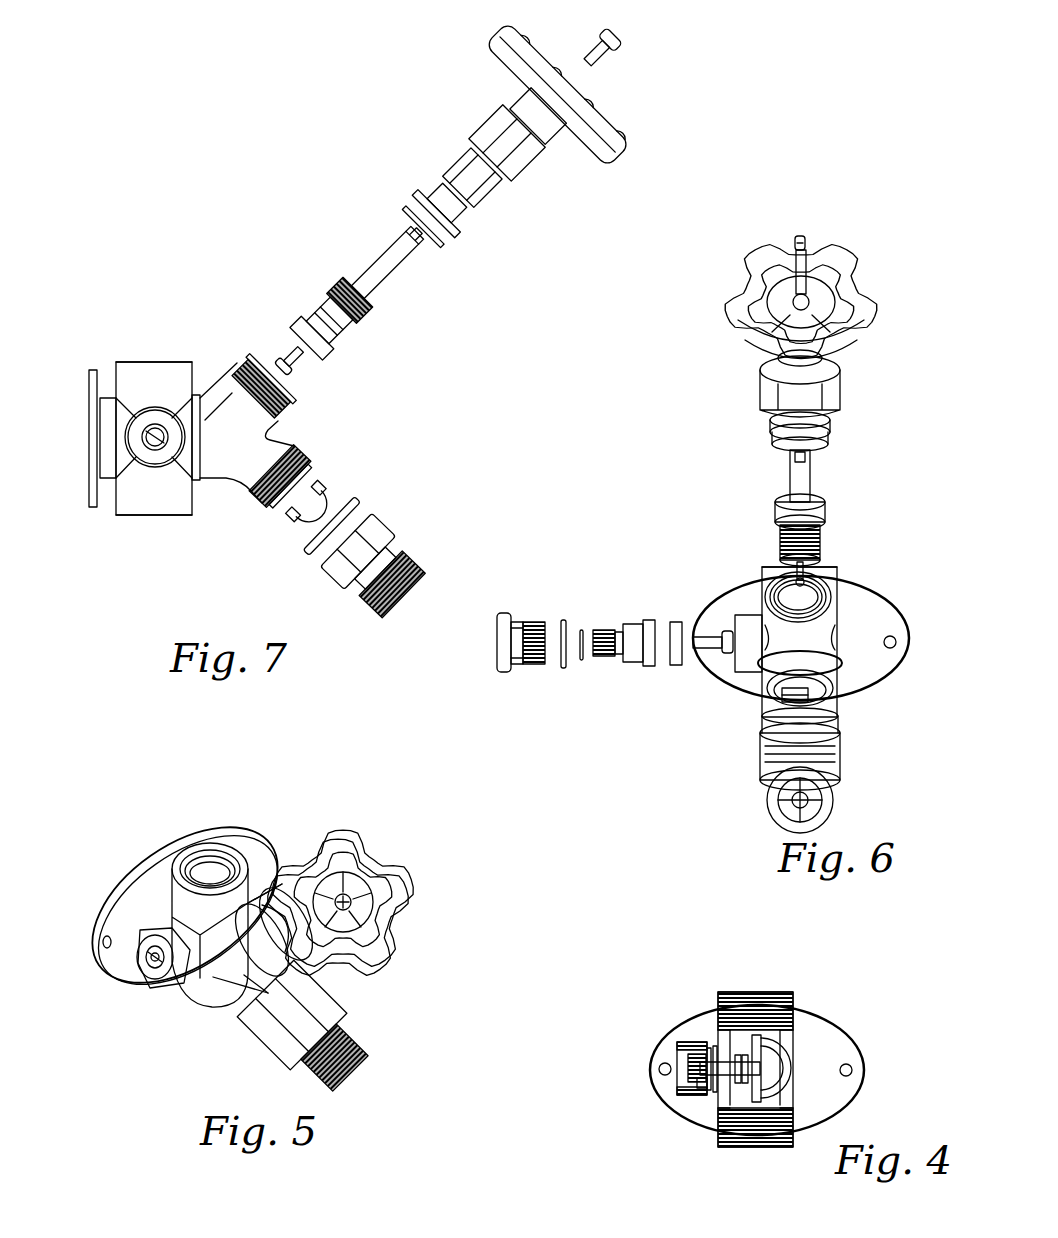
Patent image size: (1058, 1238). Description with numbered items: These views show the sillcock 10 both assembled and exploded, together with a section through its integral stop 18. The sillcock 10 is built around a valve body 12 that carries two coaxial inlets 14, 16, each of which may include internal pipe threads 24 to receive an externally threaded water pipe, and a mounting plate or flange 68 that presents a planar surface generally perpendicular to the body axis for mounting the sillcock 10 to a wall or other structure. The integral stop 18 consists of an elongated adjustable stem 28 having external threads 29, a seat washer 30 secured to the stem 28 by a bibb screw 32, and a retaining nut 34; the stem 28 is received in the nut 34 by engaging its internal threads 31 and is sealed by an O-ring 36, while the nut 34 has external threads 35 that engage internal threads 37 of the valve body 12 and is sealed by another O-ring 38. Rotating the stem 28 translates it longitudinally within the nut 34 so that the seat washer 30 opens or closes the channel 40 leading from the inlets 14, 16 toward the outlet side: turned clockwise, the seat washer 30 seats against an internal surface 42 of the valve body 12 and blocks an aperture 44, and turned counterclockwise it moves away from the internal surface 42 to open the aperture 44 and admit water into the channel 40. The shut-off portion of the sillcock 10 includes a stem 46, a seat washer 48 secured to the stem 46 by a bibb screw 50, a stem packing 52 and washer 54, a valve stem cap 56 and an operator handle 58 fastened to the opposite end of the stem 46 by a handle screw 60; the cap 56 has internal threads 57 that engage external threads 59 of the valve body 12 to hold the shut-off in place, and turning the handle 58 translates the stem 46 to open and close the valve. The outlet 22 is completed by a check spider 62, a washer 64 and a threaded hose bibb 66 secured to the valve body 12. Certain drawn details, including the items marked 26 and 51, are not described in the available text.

In FIG. 7, the sillcock 10 is at (285, 140).
In FIG. 6, the sillcock 10 is at (625, 375).
In FIG. 5, the sillcock 10 is at (180, 770).
In FIG. 7, the valve body 12 is at (210, 468).
In FIG. 6, the valve body 12 is at (845, 660).
In FIG. 5, the valve body 12 is at (205, 975).
In FIG. 4, the valve body 12 is at (798, 1088).
In FIG. 7, the inlet 14 is at (155, 362).
In FIG. 6, the inlet 14 is at (770, 570).
In FIG. 5, the inlet 14 is at (195, 855).
In FIG. 4, the inlet 14 is at (742, 998).
In FIG. 7, the inlet 16 is at (172, 517).
In FIG. 6, the inlet 16 is at (800, 642).
In FIG. 5, the inlet 16 is at (200, 1010).
In FIG. 4, the inlet 16 is at (742, 1147).
In FIG. 4, the integral stop 18 is at (658, 912).
In FIG. 7, the outlet 22 is at (390, 535).
In FIG. 6, the outlet 22 is at (845, 745).
In FIG. 5, the outlet 22 is at (275, 1040).
In FIG. 4, the internal pipe threads 24 is at (775, 1040).
In FIG. 4, the outlet passage 26 is at (772, 1147).
In FIG. 7, the elongated adjustable stem 28 is at (150, 437).
In FIG. 6, the elongated adjustable stem 28 is at (633, 664).
In FIG. 5, the elongated adjustable stem 28 is at (150, 970).
In FIG. 4, the elongated adjustable stem 28 is at (692, 1068).
In FIG. 6, the external threads 29 is at (605, 656).
In FIG. 4, the external threads 29 is at (700, 1062).
In FIG. 6, the seat washer 30 is at (675, 622).
In FIG. 4, the seat washer 30 is at (738, 1088).
In FIG. 4, the internal threads 31 is at (700, 1093).
In FIG. 6, the bibb screw 32 is at (705, 648).
In FIG. 4, the bibb screw 32 is at (740, 1078).
In FIG. 7, the retaining nut 34 is at (152, 455).
In FIG. 6, the retaining nut 34 is at (510, 613).
In FIG. 5, the retaining nut 34 is at (165, 980).
In FIG. 4, the retaining nut 34 is at (685, 1048).
In FIG. 6, the external threads 35 is at (530, 672).
In FIG. 4, the external threads 35 is at (700, 1040).
In FIG. 6, the O-ring 36 is at (582, 630).
In FIG. 4, the O-ring 36 is at (708, 1046).
In FIG. 4, the internal threads 37 is at (712, 1095).
In FIG. 6, the O-ring 38 is at (563, 668).
In FIG. 4, the O-ring 38 is at (714, 1046).
In FIG. 4, the channel 40 is at (790, 1085).
In FIG. 4, the internal surface 42 is at (770, 1035).
In FIG. 4, the aperture 44 is at (800, 1072).
In FIG. 7, the stem 46 is at (398, 268).
In FIG. 6, the stem 46 is at (798, 475).
In FIG. 7, the seat washer 48 is at (308, 322).
In FIG. 6, the seat washer 48 is at (825, 525).
In FIG. 7, the bibb screw 50 is at (298, 360).
In FIG. 6, the bibb screw 50 is at (808, 566).
In FIG. 6, the inlet bore 51 is at (830, 610).
In FIG. 7, the stem packing 52 is at (465, 228).
In FIG. 6, the stem packing 52 is at (775, 420).
In FIG. 7, the washer 54 is at (408, 215).
In FIG. 6, the washer 54 is at (828, 432).
In FIG. 7, the valve stem cap 56 is at (520, 162).
In FIG. 6, the valve stem cap 56 is at (832, 378).
In FIG. 5, the valve stem cap 56 is at (258, 920).
In FIG. 7, the internal threads 57 is at (496, 216).
In FIG. 7, the operator handle 58 is at (500, 45).
In FIG. 6, the operator handle 58 is at (745, 265).
In FIG. 5, the operator handle 58 is at (408, 892).
In FIG. 7, the external threads 59 is at (250, 370).
In FIG. 7, the handle screw 60 is at (600, 65).
In FIG. 6, the handle screw 60 is at (796, 238).
In FIG. 5, the handle screw 60 is at (352, 896).
In FIG. 7, the check spider 62 is at (322, 490).
In FIG. 6, the check spider 62 is at (782, 695).
In FIG. 7, the washer 64 is at (355, 512).
In FIG. 6, the washer 64 is at (840, 712).
In FIG. 7, the threaded hose bibb 66 is at (420, 568).
In FIG. 6, the threaded hose bibb 66 is at (775, 810).
In FIG. 5, the threaded hose bibb 66 is at (352, 1062).
In FIG. 7, the mounting plate or flange 68 is at (93, 370).
In FIG. 6, the mounting plate or flange 68 is at (870, 600).
In FIG. 5, the mounting plate or flange 68 is at (118, 905).
In FIG. 4, the mounting plate or flange 68 is at (838, 1040).